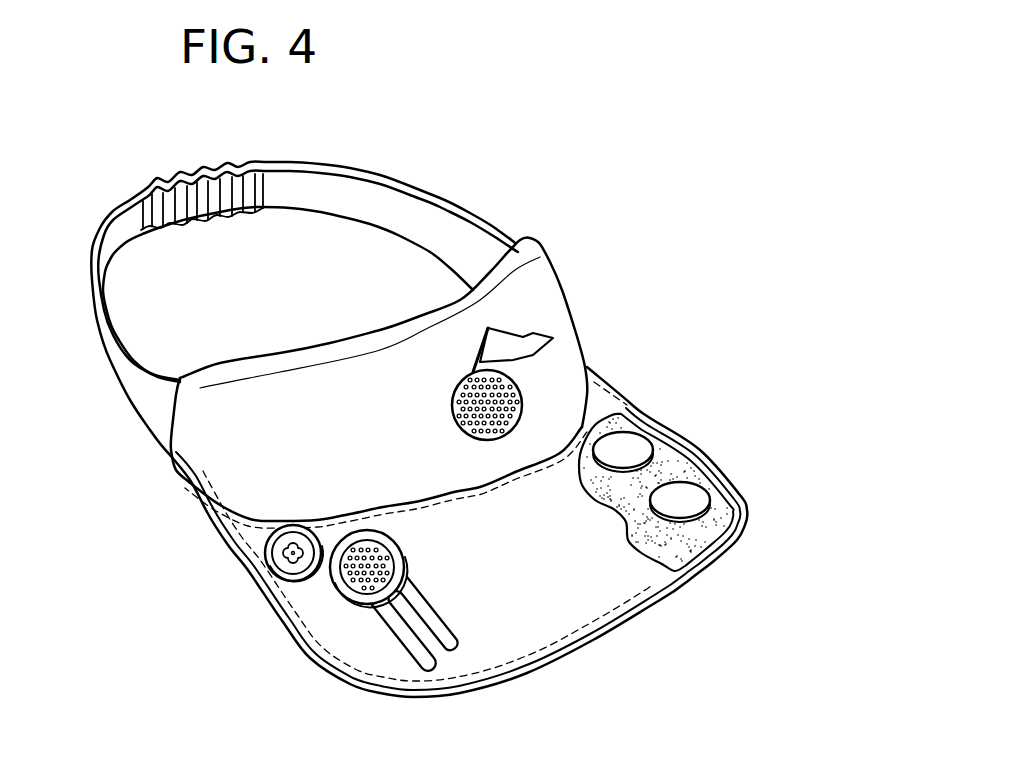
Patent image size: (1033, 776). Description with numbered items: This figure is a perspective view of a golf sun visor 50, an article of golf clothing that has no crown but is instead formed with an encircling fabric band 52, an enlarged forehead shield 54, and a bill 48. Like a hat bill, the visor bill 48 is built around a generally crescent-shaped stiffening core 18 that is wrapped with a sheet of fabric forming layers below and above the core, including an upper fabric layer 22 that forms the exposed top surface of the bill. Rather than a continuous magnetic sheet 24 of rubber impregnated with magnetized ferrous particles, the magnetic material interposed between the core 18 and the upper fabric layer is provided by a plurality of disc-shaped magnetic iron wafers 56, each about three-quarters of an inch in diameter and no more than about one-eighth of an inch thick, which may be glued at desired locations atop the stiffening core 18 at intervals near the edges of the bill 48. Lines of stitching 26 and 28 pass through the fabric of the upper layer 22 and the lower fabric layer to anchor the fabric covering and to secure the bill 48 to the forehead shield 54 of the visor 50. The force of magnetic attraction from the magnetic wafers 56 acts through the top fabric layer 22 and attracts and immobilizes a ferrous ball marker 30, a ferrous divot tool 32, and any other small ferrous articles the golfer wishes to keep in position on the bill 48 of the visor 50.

The stiffening core 18 is at (687, 470).
The upper fabric layer 22 is at (597, 600).
The magnetic sheet 24 is at (670, 550).
The line of stitching 26 is at (307, 617).
The line of stitching 28 is at (273, 522).
The ferrous ball marker 30 is at (288, 553).
The ferrous divot tool 32 is at (397, 633).
The visor bill 48 is at (700, 437).
The visor 50 is at (577, 226).
The encircling fabric band 52 is at (350, 200).
The forehead shield 54 is at (563, 350).
The magnetic iron wafers 56 is at (630, 450).